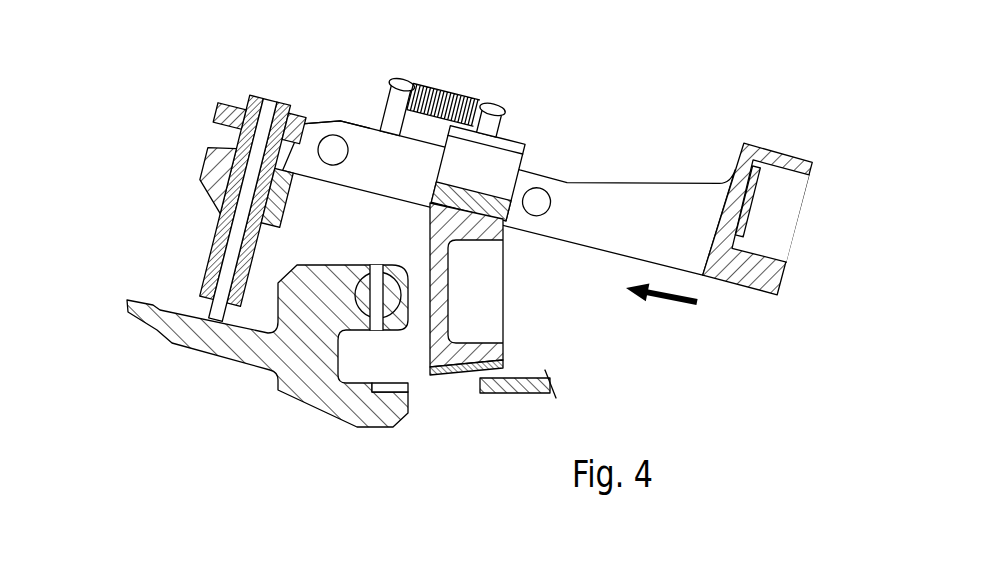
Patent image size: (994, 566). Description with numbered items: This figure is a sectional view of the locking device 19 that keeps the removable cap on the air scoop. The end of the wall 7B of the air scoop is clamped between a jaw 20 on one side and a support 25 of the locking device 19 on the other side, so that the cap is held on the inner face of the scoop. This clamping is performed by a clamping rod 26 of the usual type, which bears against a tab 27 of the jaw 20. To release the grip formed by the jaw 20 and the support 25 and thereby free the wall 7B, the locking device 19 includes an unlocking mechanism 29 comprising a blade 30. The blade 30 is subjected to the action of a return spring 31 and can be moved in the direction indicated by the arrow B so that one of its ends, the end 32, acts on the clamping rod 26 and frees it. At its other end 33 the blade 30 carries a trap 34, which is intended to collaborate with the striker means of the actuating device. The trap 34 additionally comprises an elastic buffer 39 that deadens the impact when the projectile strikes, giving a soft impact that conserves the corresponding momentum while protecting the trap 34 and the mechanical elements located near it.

The locking device 19 is at (152, 140).
The jaw 20 is at (379, 414).
The support 25 is at (503, 342).
The clamping rod 26 is at (226, 186).
The tab 27 is at (201, 340).
The unlocking mechanism 29 is at (521, 103).
The blade 30 is at (633, 182).
The return spring 31 is at (442, 90).
The end of the blade 32 is at (309, 112).
The other end of the blade 33 is at (755, 227).
The trap 34 is at (745, 283).
The elastic buffer 39 is at (748, 210).
The wall of the air scoop 7B is at (510, 394).
The arrow B is at (665, 312).